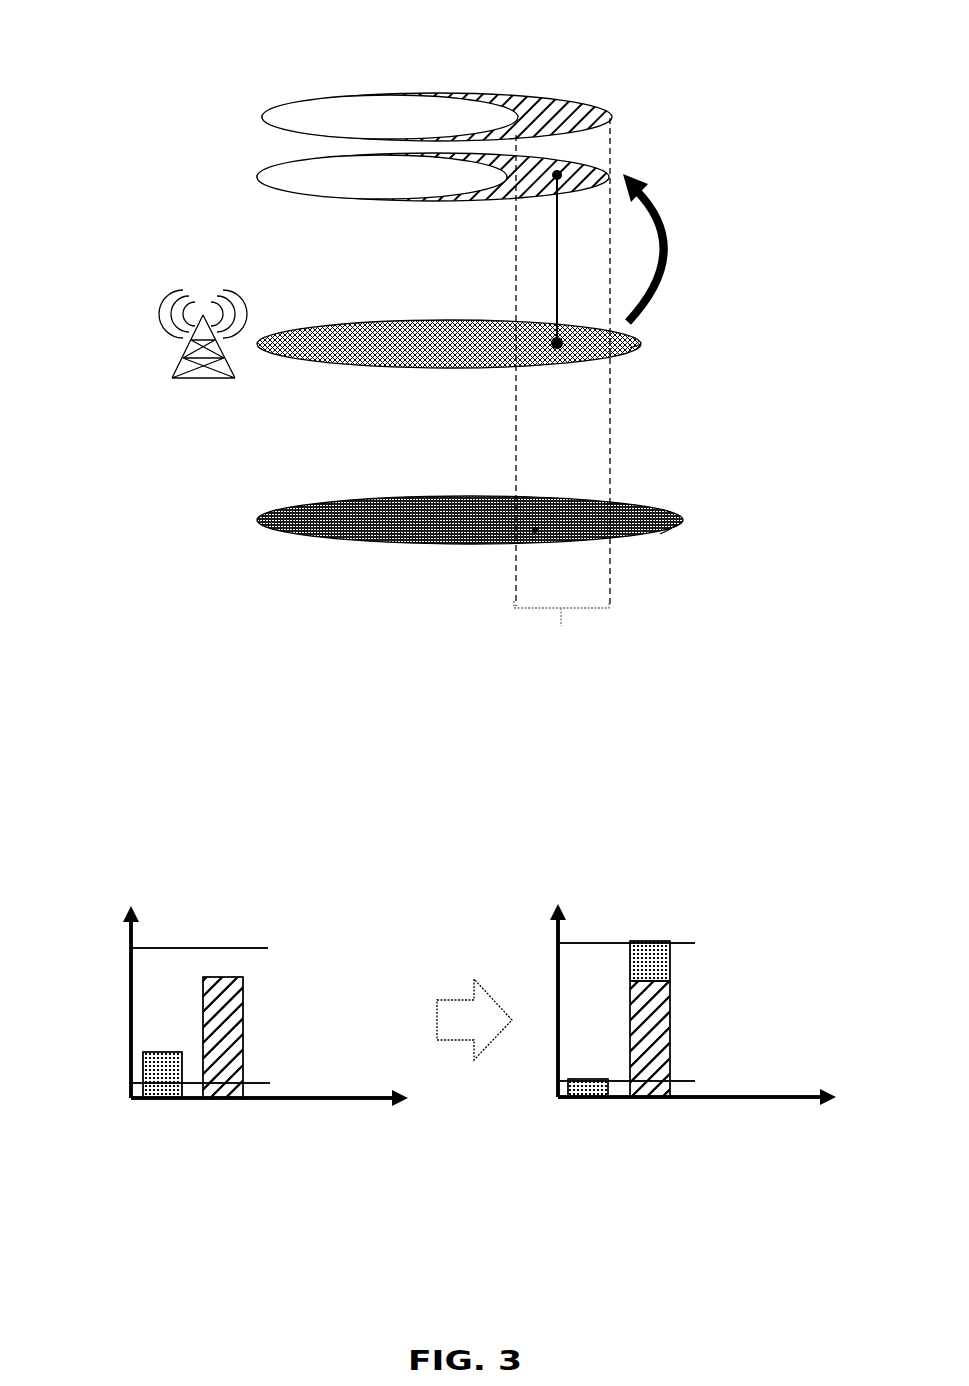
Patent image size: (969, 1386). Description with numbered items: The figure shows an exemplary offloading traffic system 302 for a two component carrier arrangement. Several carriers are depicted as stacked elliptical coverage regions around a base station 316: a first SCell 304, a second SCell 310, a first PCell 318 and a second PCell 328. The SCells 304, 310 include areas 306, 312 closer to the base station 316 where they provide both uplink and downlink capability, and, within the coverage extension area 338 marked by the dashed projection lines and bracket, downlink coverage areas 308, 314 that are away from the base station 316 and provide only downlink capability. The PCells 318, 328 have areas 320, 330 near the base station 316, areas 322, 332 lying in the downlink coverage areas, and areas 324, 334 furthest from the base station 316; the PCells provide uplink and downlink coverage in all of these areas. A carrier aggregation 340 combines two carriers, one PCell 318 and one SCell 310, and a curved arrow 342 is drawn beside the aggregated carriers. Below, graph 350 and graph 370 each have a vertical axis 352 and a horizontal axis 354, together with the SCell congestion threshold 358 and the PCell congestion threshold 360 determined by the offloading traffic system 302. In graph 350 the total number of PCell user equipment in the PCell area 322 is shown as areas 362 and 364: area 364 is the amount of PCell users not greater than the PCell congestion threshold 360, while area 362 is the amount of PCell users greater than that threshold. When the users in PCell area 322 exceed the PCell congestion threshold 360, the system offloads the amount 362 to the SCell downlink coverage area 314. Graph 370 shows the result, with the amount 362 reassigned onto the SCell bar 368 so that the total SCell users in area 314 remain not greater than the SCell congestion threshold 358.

The offloading traffic system 302 is at (392, 32).
The first SCell 304 is at (256, 118).
The area of first SCell closer to the base station 306 is at (305, 94).
The downlink coverage area of first SCell 308 is at (520, 100).
The second SCell 310 is at (238, 180).
The area of second SCell closer to the base station 312 is at (282, 196).
The downlink coverage area of second SCell 314 is at (540, 205).
The base station 316 is at (155, 316).
The first PCell 318 is at (333, 305).
The area of first PCell near the base station 320 is at (337, 364).
The area of first PCell in the downlink coverage areas 322 is at (580, 356).
The area of first PCell furthest from the base station 324 is at (634, 350).
The second PCell 328 is at (414, 478).
The area of second PCell near the base station 330 is at (370, 541).
The area of second PCell in the downlink coverage areas 332 is at (538, 534).
The area of second PCell furthest from the base station 334 is at (655, 532).
The coverage extension area 338 is at (590, 616).
The carrier aggregation 340 is at (561, 278).
The rotation arrow 342 is at (667, 278).
The graph 350 is at (226, 872).
The power axis 352 is at (131, 948).
The frequency axis 354 is at (332, 1100).
The SCell congestion threshold 358 is at (268, 948).
The PCell congestion threshold 360 is at (270, 1082).
The area of PCell users greater than the PCell congestion threshold 362 is at (143, 1060).
The area of PCell users not greater than the PCell congestion threshold 364 is at (143, 1100).
The second signal power bar 368 is at (243, 1003).
The graph 370 is at (673, 875).